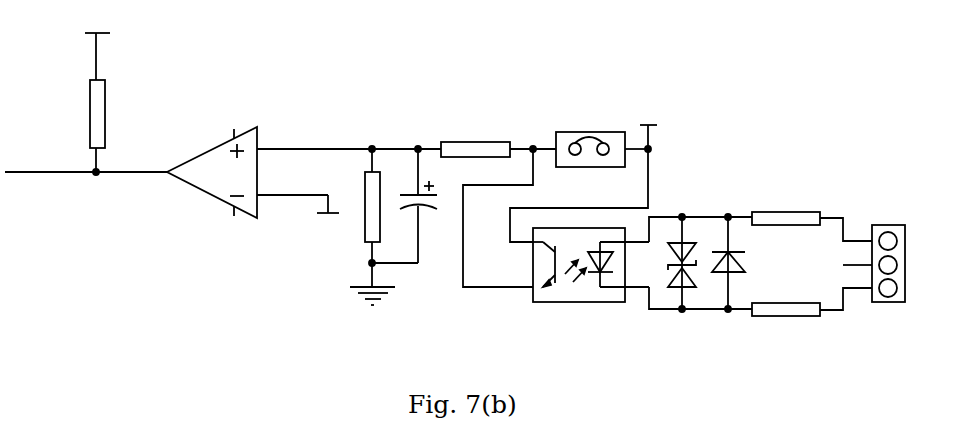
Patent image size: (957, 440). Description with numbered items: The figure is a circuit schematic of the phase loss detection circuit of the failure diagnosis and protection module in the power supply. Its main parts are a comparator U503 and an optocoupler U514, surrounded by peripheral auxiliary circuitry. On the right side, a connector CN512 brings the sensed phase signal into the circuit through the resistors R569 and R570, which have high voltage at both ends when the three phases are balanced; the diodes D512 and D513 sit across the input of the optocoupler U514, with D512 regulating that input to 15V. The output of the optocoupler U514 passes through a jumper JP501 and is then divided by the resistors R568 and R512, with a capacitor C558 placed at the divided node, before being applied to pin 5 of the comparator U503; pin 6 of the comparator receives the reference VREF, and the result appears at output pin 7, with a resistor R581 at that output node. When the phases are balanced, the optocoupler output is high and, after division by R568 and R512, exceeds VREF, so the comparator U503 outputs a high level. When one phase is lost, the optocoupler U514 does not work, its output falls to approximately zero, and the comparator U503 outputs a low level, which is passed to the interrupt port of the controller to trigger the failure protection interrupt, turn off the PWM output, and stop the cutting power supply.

The resistor R581 is at (118, 126).
The op-amp output pin 7 is at (143, 161).
The comparator U503 is at (211, 186).
The op-amp non-inverting input pin 5 is at (349, 139).
The op-amp inverting input pin 6 is at (292, 185).
The reference voltage VREF is at (319, 217).
The resistor R512 is at (354, 218).
The electrolytic capacitor C558 is at (404, 206).
The resistor R568 is at (475, 140).
The jumper JP501 is at (602, 138).
The 15V supply 15V is at (652, 128).
The optocoupler U514 is at (591, 255).
The diode D512 is at (679, 251).
The diode D513 is at (725, 277).
The resistor R569 is at (811, 217).
The resistor R570 is at (812, 314).
The connector CN512 is at (877, 278).